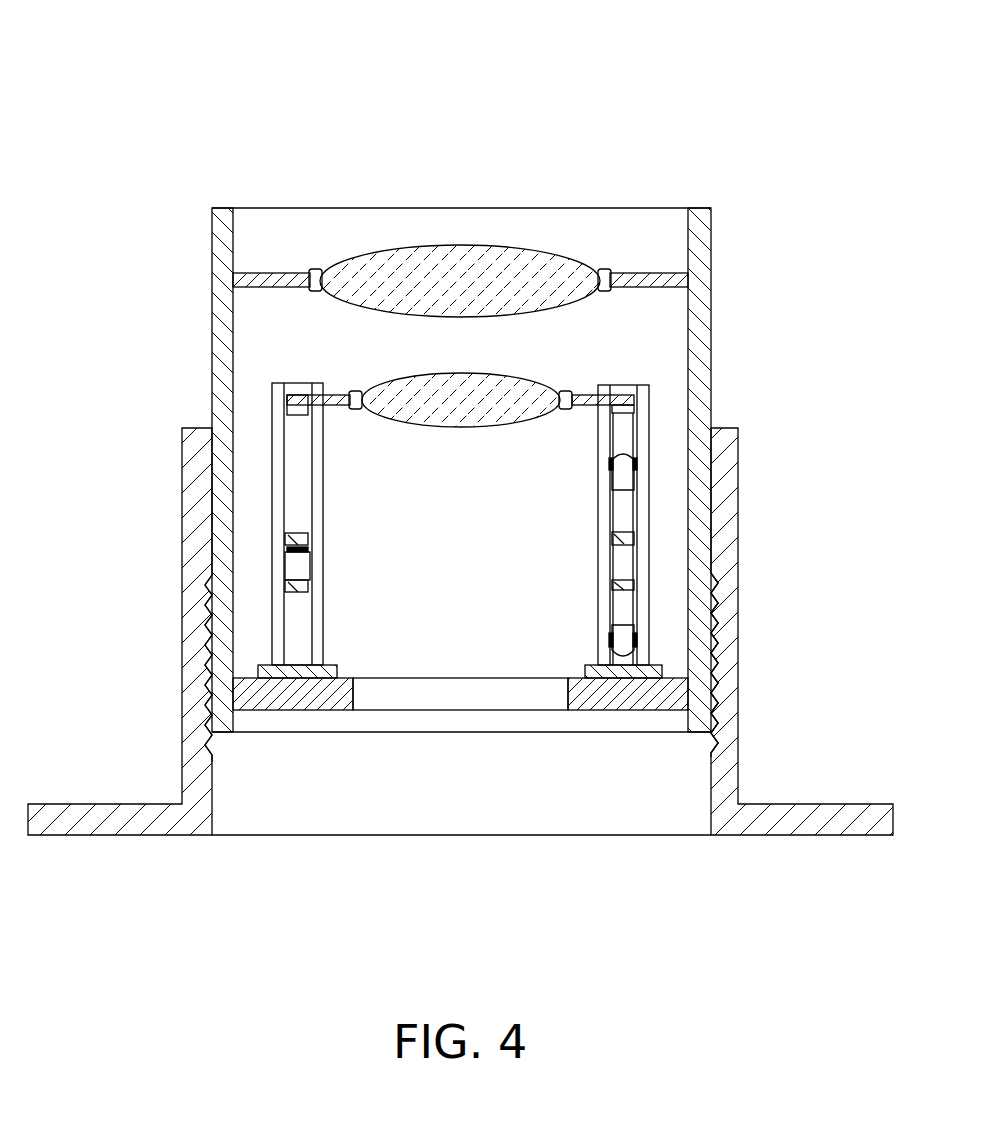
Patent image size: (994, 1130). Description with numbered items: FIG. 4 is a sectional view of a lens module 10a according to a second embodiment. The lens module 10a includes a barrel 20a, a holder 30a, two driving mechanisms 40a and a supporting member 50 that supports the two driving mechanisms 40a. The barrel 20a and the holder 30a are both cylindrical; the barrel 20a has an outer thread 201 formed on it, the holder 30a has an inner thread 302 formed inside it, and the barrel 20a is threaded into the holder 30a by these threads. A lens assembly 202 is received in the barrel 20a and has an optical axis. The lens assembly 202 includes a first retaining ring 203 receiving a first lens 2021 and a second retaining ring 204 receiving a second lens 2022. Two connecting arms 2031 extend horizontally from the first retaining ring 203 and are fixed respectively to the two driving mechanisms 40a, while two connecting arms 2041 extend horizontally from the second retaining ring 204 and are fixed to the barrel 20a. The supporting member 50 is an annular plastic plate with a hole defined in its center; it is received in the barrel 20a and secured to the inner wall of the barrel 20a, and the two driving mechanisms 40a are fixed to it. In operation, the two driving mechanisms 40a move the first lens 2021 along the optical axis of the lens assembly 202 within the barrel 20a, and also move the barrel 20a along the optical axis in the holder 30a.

The lens module 10a is at (481, 46).
The barrel 20a is at (464, 480).
The outer thread 201 is at (712, 613).
The lens assembly 202 is at (495, 132).
The first lens 2021 is at (398, 378).
The second lens 2022 is at (442, 248).
The first retaining ring 203 is at (550, 343).
The connecting arms 2031 is at (582, 402).
The second retaining ring 204 is at (498, 202).
The connecting arms 2041 is at (657, 282).
The holder 30a is at (460, 674).
The inner thread 302 is at (710, 745).
The driving mechanisms 40a is at (643, 457).
The supporting member 50 is at (625, 697).